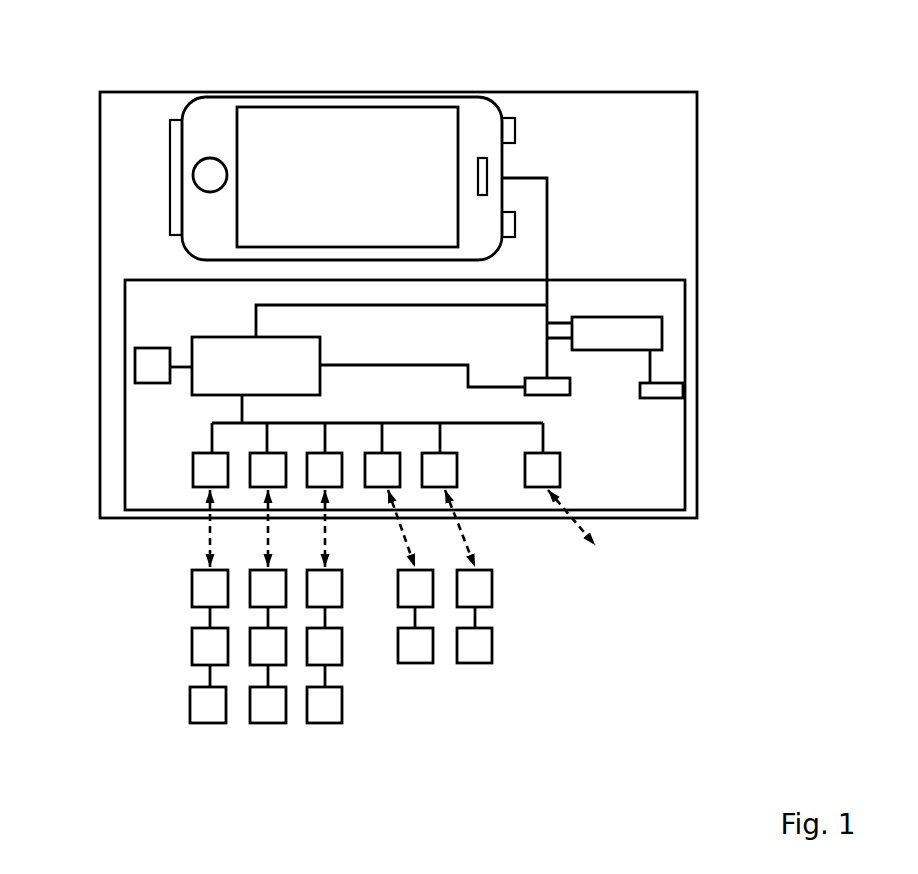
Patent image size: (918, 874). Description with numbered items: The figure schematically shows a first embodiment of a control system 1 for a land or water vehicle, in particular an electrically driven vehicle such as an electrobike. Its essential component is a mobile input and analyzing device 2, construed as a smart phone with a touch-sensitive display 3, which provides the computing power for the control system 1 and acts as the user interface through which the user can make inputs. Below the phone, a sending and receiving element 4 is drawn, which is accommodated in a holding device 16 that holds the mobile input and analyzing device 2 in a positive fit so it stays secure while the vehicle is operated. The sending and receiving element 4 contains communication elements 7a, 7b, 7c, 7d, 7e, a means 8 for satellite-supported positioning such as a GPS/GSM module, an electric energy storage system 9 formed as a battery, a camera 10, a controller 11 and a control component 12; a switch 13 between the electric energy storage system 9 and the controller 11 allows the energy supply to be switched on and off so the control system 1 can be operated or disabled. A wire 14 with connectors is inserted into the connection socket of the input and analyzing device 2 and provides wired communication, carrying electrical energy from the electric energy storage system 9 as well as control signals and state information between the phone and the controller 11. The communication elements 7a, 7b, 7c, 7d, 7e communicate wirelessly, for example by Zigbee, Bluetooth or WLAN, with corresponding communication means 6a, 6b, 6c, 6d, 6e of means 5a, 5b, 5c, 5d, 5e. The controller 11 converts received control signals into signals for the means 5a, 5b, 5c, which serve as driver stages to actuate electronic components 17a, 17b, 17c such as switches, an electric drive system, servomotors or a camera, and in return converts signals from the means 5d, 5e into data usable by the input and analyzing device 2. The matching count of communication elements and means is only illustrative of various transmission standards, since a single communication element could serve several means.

The control system 1 is at (308, 63).
The input and analyzing device 2 is at (351, 148).
The display 3 is at (433, 120).
The sending and receiving element 4 is at (145, 278).
The means 5a is at (207, 667).
The means 5b is at (250, 663).
The means 5c is at (307, 667).
The means 5d is at (415, 663).
The means 5e is at (475, 663).
The communication means 6a is at (192, 592).
The communication means 6b is at (248, 590).
The communication means 6c is at (342, 595).
The communication means 6d is at (433, 607).
The communication means 6e is at (492, 590).
The communication element 7a is at (192, 468).
The communication element 7b is at (266, 453).
The communication element 7c is at (322, 455).
The communication element 7d is at (385, 488).
The communication element 7e is at (460, 470).
The means for satellite-supported positioning 8 is at (560, 480).
The electric energy storage system 9 is at (650, 327).
The camera 10 is at (675, 392).
The controller 11 is at (210, 348).
The control component 12 is at (147, 358).
The switch 13 is at (572, 388).
The wire 14 is at (548, 210).
The holding device 16 is at (697, 137).
The electronic component 17a is at (205, 723).
The electronic component 17b is at (268, 723).
The electronic component 17c is at (325, 723).